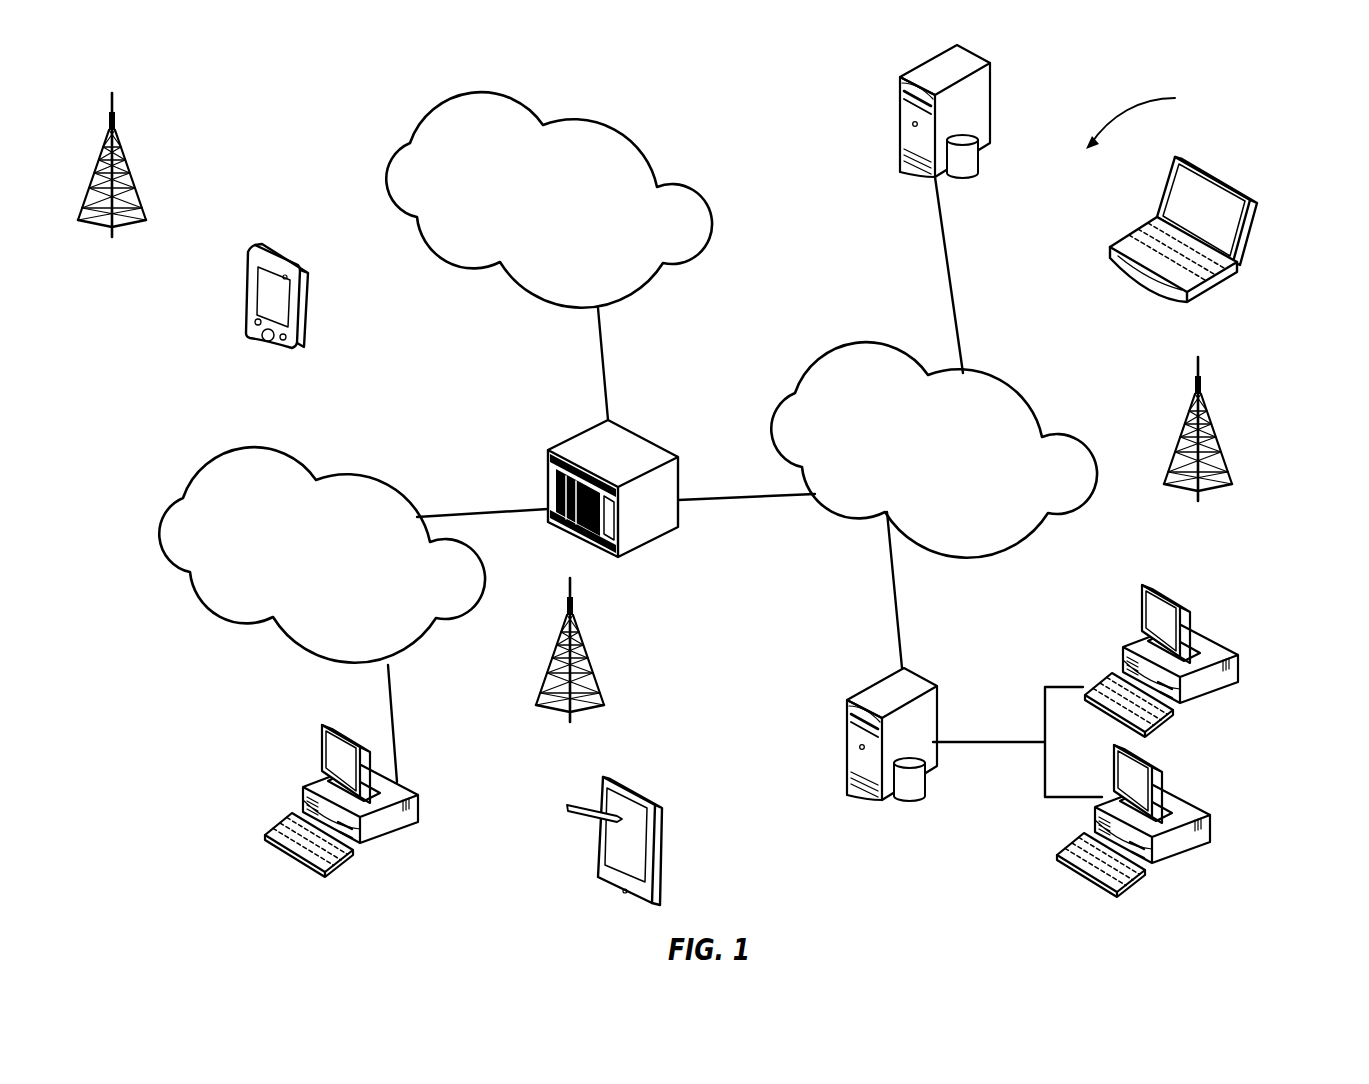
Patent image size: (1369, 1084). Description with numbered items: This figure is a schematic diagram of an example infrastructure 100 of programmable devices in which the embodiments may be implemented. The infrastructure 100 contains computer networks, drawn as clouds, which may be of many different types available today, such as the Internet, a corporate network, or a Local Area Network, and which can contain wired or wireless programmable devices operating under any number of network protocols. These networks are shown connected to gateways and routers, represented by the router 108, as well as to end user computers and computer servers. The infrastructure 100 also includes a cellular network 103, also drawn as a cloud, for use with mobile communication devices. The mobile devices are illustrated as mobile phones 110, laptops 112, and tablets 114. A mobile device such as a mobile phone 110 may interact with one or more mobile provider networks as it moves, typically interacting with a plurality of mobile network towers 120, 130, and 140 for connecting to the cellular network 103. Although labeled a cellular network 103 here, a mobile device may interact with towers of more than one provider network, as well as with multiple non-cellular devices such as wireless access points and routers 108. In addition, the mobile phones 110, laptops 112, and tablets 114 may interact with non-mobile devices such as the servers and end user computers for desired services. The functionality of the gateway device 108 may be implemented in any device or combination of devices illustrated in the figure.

The infrastructure 100 is at (1149, 118).
The cellular network 103 is at (597, 128).
The gateways and routers 108 is at (638, 433).
The mobile phones 110 is at (287, 250).
The laptops 112 is at (1230, 182).
The tablets 114 is at (645, 787).
The mobile network tower 120 is at (570, 666).
The mobile network tower 130 is at (1198, 444).
The mobile network tower 140 is at (112, 180).